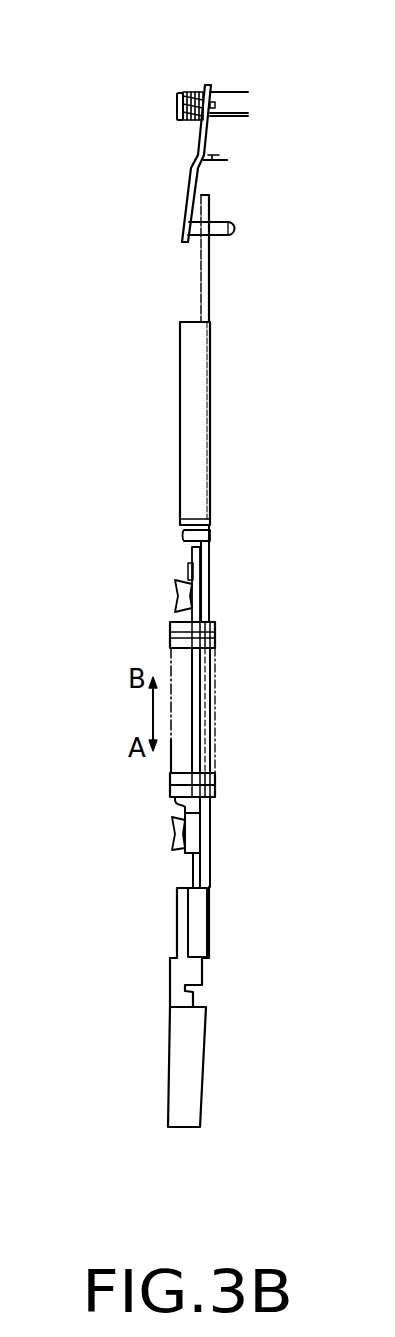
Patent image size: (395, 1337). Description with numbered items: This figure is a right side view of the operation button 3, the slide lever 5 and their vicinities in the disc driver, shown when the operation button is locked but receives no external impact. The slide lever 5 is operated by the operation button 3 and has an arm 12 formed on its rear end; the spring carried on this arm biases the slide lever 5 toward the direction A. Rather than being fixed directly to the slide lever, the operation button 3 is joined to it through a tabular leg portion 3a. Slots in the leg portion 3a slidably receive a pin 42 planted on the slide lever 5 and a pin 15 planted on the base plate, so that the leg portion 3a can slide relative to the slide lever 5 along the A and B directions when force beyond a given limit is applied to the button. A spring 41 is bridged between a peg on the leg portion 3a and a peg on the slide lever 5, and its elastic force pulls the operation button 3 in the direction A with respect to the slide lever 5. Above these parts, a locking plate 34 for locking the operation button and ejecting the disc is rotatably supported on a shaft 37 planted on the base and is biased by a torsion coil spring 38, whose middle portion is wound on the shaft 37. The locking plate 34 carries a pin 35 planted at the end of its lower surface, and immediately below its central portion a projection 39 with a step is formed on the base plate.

The locking plate 34 is at (191, 187).
The shaft 37 is at (176, 104).
The torsion coil spring 38 is at (197, 93).
The projection 39 is at (226, 162).
The pin 35 is at (234, 230).
The arm 12 is at (210, 292).
The pin 42 is at (175, 582).
The slide lever 5 is at (206, 663).
The spring 41 is at (185, 773).
The pin 15 is at (180, 833).
The leg portion 3a is at (177, 919).
The operation button 3 is at (197, 1067).